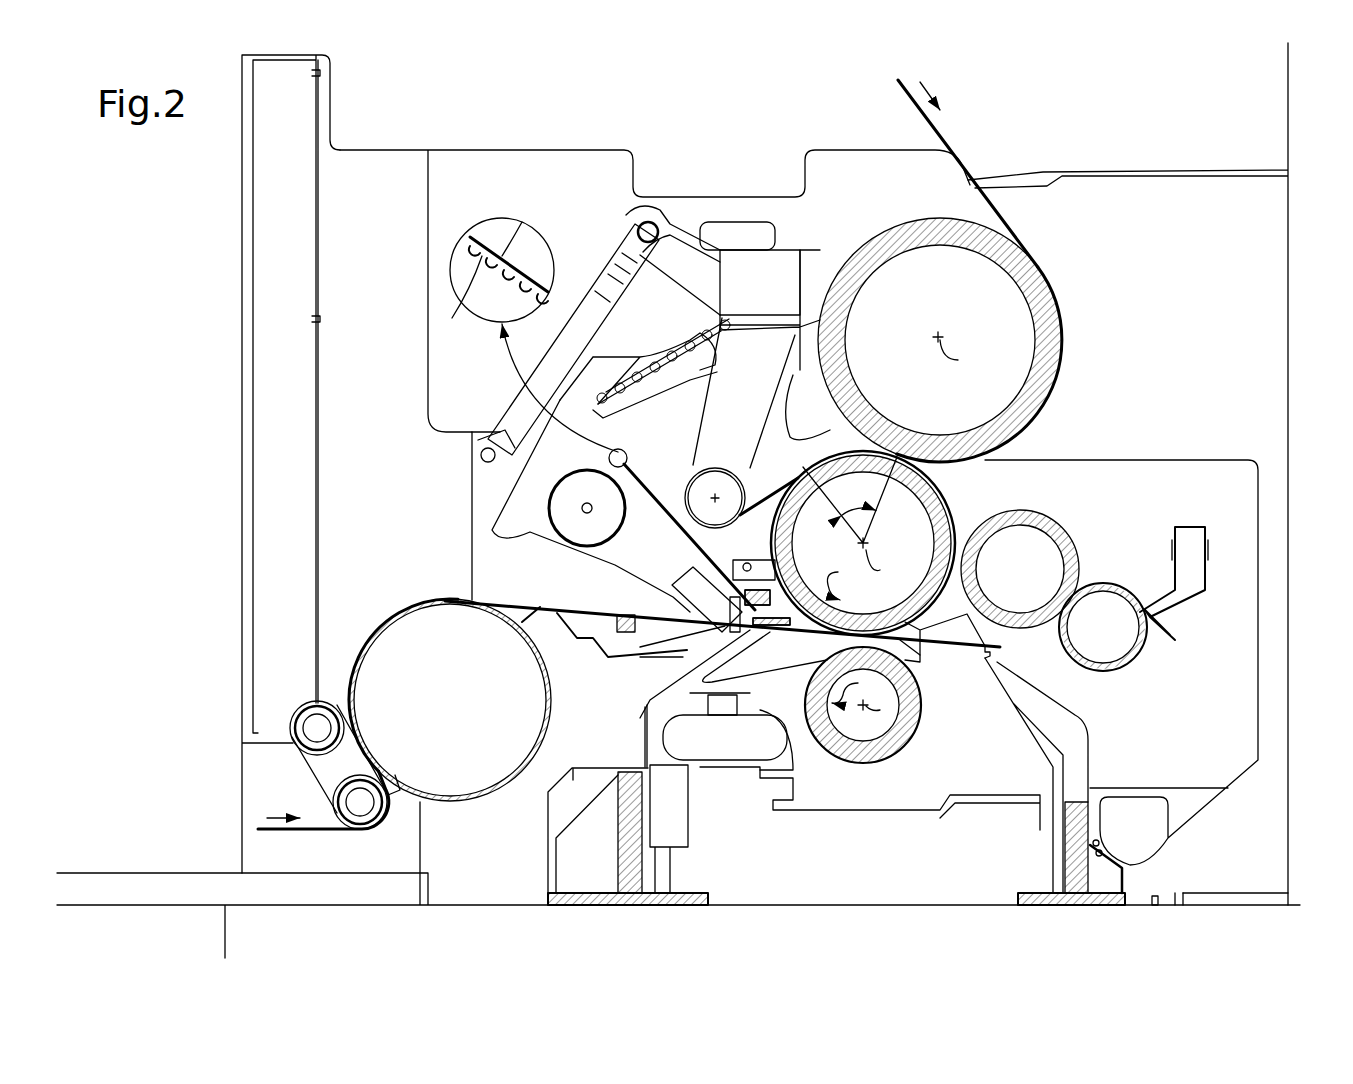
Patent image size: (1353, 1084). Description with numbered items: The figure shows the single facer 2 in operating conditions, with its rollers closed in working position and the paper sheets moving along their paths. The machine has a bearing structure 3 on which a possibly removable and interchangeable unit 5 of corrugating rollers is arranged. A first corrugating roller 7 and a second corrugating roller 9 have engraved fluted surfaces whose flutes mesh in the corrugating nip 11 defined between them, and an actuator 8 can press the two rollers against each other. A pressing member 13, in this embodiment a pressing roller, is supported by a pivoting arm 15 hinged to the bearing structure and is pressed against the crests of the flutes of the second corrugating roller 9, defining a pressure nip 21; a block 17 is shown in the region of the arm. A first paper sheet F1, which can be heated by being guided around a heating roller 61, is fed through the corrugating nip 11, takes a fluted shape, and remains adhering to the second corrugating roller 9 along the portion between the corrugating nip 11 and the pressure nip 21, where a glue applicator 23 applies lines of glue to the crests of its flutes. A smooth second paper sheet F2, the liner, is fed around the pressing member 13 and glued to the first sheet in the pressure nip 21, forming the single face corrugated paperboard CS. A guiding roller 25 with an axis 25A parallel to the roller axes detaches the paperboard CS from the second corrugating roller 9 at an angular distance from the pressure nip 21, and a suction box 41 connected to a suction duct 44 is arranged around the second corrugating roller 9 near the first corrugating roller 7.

The single facer 2 is at (418, 138).
The bearing structure 3 is at (443, 537).
The unit of corrugating rollers 5 is at (820, 812).
The first corrugating roller 7 is at (862, 755).
The actuator 8 is at (740, 740).
The second corrugating roller 9 is at (925, 598).
The corrugating nip 11 is at (910, 641).
The pressing member 13 is at (900, 218).
The pivoting arm 15 is at (692, 265).
The bearing block 17 is at (818, 270).
The pressure nip 21 is at (946, 470).
The glue applicator 23 is at (1196, 505).
The guiding roller 25 is at (743, 465).
The axis of the guiding roller 25A is at (718, 494).
The suction box 41 is at (800, 588).
The suction duct 44 is at (690, 580).
The heating roller 61 is at (388, 667).
The single face corrugated paperboard CS is at (548, 247).
The first paper sheet F1 is at (308, 829).
The second paper sheet F2 is at (905, 95).